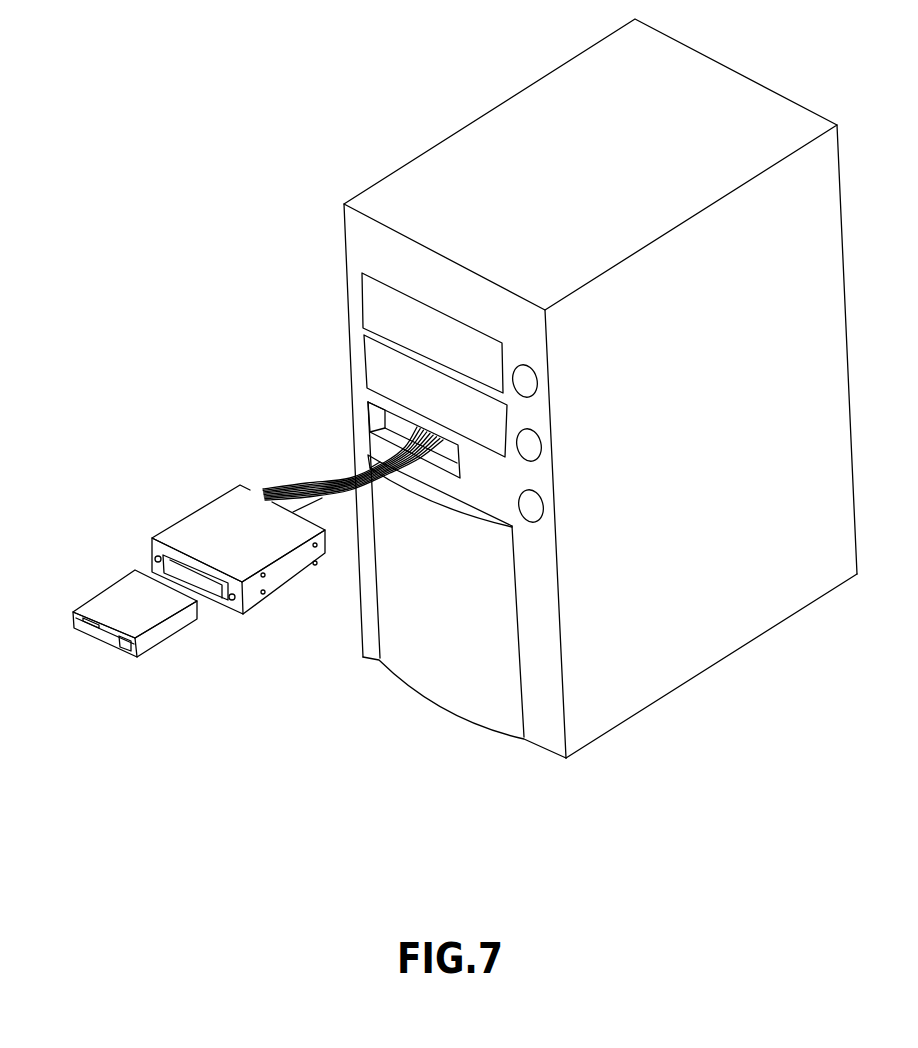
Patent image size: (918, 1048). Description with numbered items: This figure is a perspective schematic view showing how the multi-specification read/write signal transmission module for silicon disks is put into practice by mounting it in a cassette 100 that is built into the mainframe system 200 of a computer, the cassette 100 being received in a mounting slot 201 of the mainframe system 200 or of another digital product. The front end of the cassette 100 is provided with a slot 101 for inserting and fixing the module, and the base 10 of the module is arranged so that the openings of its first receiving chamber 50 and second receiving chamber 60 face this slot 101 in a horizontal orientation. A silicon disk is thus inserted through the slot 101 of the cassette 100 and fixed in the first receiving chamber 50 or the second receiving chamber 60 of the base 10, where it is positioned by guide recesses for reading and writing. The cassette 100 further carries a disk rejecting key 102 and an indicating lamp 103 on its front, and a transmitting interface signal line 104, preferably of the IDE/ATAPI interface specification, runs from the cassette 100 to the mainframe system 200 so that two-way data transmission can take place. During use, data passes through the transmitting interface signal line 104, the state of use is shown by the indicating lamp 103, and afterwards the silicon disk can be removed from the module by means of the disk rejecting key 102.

The mainframe system 200 is at (517, 173).
The mounting slot 201 is at (380, 418).
The transmitting interface signal line 104 is at (305, 482).
The cassette 100 is at (212, 515).
The disk rejecting key 102 is at (154, 558).
The slot 101 is at (217, 587).
The indicating lamp 103 is at (232, 603).
The base 10 is at (125, 653).
The first receiving chamber 50 is at (67, 622).
The second receiving chamber 60 is at (107, 637).